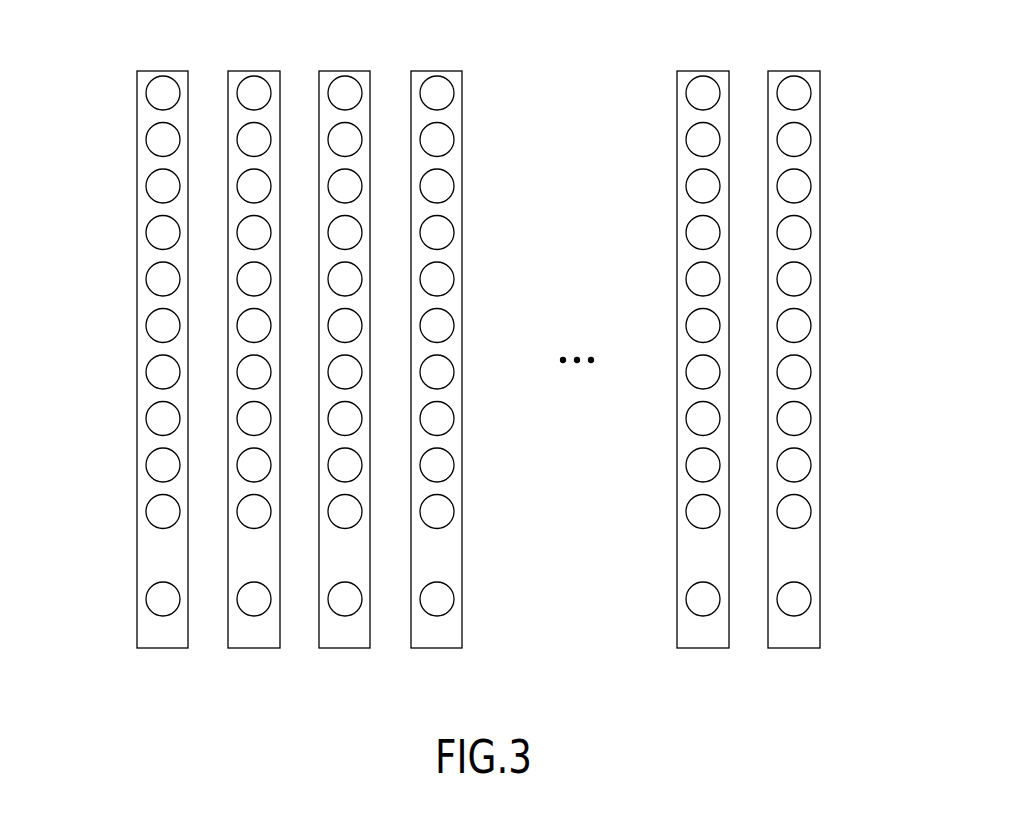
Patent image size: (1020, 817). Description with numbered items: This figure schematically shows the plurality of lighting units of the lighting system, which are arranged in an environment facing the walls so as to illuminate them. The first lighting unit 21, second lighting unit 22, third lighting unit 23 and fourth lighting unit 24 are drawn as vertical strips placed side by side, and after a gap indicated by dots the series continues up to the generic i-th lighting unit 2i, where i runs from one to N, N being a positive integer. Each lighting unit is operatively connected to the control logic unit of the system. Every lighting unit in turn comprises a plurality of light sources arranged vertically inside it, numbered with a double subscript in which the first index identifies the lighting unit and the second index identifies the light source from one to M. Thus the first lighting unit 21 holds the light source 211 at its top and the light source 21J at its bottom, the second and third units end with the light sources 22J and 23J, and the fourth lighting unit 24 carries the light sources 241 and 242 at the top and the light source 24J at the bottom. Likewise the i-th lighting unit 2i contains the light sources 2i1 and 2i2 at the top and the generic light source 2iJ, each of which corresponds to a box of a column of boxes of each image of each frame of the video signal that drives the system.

The lighting unit 21 is at (145, 71).
The lighting unit 22 is at (237, 71).
The lighting unit 23 is at (328, 71).
The lighting unit 24 is at (418, 71).
The lighting unit 2i is at (807, 71).
The light source 211 is at (152, 93).
The light source 21J is at (150, 599).
The light source 22J is at (247, 602).
The light source 23J is at (345, 602).
The light source 241 is at (445, 93).
The light source 242 is at (445, 140).
The light source 24J is at (447, 599).
The light source 2i1 is at (803, 93).
The light source 2i2 is at (803, 140).
The light source 2iJ is at (802, 600).